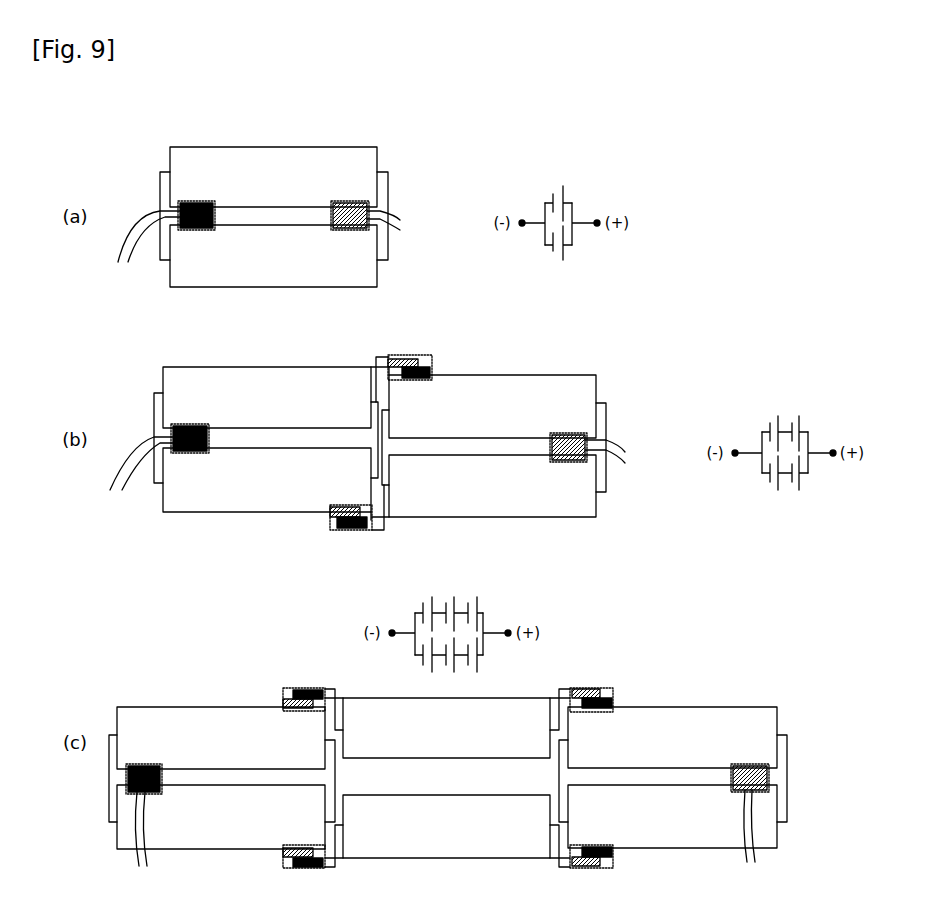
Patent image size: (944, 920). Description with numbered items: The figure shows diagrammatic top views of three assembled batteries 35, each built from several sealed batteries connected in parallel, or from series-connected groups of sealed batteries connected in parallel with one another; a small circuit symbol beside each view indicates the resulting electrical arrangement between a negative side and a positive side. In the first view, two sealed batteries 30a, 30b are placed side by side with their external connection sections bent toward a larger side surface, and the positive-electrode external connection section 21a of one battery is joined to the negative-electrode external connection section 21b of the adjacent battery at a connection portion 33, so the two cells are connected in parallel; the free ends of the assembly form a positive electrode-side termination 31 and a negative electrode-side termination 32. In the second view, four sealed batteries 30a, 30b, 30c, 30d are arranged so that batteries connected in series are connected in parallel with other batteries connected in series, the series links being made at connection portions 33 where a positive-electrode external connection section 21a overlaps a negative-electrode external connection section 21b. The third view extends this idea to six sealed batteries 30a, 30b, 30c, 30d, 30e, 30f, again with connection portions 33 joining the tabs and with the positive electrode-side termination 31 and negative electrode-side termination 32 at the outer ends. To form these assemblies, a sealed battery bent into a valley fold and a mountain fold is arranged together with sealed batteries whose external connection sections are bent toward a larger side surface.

The assembled battery 35 is at (372, 136).
The connection portion 33 is at (197, 204).
The positive electrode-side termination 31 is at (587, 549).
The negative electrode-side termination 32 is at (143, 549).
The positive-electrode external connection section 21a is at (395, 360).
The negative-electrode external connection section 21b is at (418, 362).
The sealed battery 30a is at (447, 458).
The sealed battery 30b is at (493, 491).
The sealed battery 30c is at (470, 608).
The sealed battery 30d is at (467, 652).
The sealed battery 30e is at (446, 765).
The sealed battery 30f is at (629, 756).